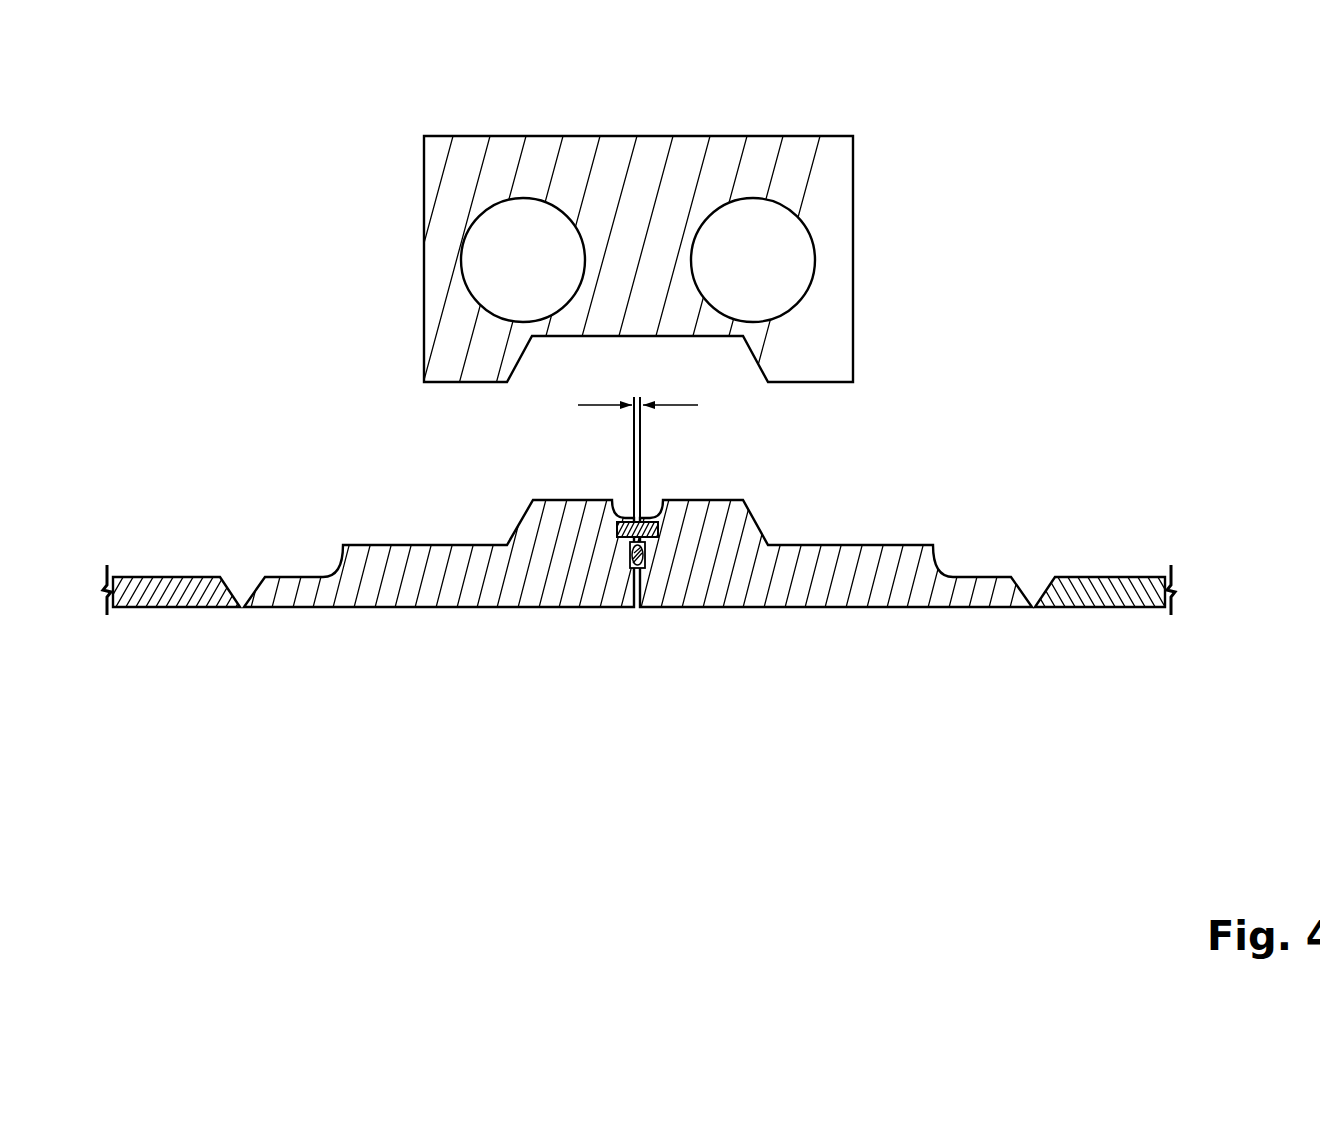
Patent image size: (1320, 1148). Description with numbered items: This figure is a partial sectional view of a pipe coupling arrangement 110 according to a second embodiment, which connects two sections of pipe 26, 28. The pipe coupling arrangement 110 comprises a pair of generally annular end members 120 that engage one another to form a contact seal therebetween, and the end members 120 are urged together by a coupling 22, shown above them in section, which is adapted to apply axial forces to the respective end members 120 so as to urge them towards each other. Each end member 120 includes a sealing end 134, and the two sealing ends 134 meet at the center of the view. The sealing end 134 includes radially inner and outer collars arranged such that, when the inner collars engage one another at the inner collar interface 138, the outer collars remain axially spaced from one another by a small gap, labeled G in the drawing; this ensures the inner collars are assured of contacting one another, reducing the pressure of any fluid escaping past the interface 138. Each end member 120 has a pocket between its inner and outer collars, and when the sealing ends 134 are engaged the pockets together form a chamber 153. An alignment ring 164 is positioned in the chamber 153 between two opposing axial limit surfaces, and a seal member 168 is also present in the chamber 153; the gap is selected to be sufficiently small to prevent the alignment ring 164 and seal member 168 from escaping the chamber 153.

The pipe coupling arrangement 110 is at (1078, 104).
The coupling 22 is at (424, 173).
The section of pipe 26 is at (138, 595).
The section of pipe 28 is at (1095, 598).
The end member 120 is at (313, 595).
The sealing end 134 is at (617, 587).
The inner collar interface 138 is at (633, 607).
The chamber 153 is at (660, 515).
The alignment ring 164 is at (617, 515).
The seal member 168 is at (645, 553).